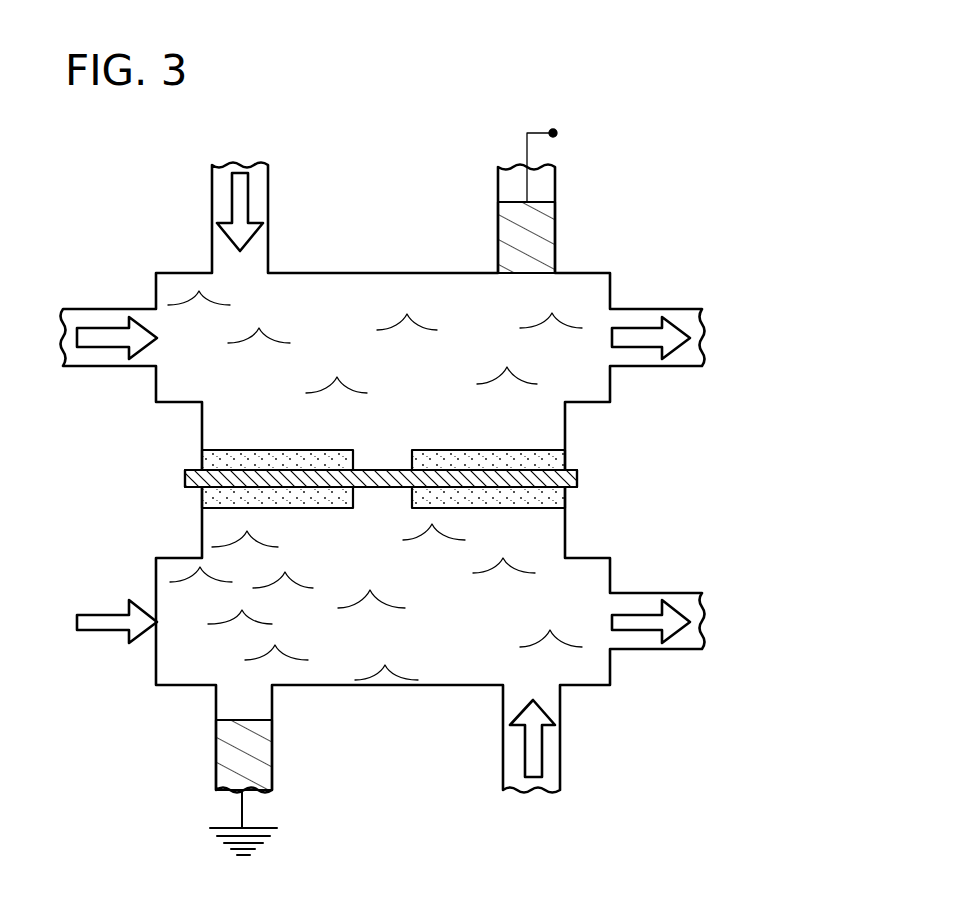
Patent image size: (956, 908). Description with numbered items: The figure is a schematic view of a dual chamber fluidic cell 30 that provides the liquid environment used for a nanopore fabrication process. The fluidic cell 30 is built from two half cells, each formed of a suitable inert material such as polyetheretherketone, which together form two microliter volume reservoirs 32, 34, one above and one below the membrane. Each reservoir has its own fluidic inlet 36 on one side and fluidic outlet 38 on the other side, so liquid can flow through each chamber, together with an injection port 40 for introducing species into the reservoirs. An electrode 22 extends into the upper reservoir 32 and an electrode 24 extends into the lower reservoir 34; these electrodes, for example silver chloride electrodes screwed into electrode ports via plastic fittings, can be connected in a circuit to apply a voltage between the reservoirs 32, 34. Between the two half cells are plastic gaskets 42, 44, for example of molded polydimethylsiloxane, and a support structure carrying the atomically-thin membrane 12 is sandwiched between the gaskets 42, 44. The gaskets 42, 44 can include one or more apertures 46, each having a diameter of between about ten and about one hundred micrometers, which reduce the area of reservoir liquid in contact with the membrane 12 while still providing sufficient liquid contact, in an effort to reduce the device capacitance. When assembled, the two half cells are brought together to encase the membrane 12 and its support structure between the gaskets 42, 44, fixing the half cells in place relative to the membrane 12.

The atomically-thin membrane 12 is at (377, 478).
The electrode 22 is at (555, 210).
The electrode 24 is at (272, 768).
The fluidic cell 30 is at (771, 350).
The reservoir 32 is at (447, 312).
The reservoir 34 is at (464, 665).
The fluidic inlet 36 is at (102, 318).
The fluidic outlet 38 is at (636, 322).
The injection port 40 is at (222, 178).
The gasket 42 is at (200, 463).
The gasket 44 is at (200, 501).
The aperture 46 is at (361, 449).